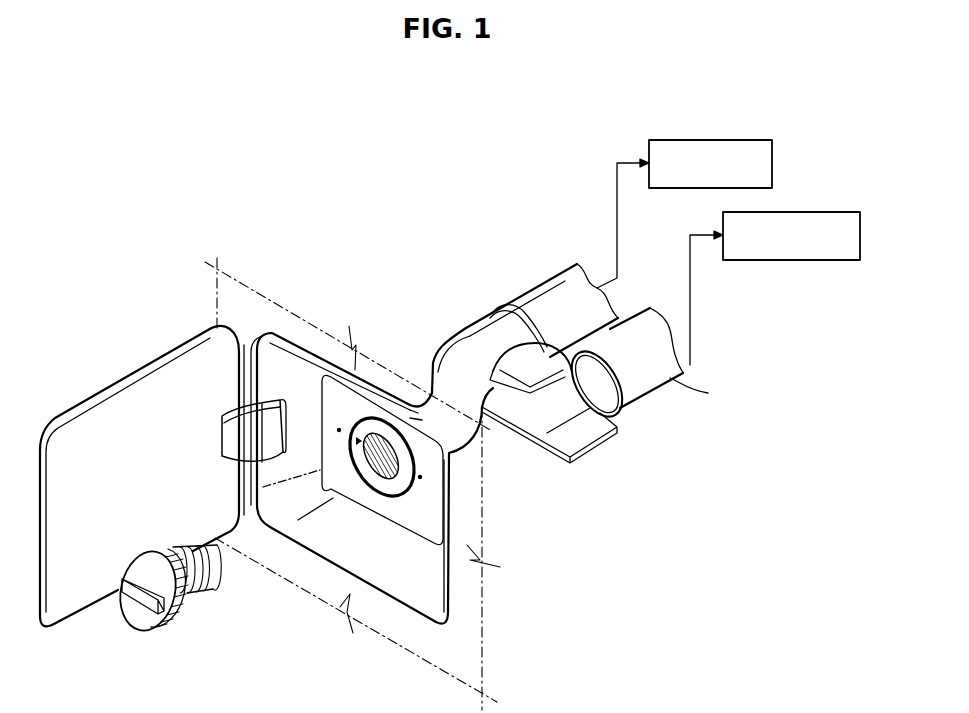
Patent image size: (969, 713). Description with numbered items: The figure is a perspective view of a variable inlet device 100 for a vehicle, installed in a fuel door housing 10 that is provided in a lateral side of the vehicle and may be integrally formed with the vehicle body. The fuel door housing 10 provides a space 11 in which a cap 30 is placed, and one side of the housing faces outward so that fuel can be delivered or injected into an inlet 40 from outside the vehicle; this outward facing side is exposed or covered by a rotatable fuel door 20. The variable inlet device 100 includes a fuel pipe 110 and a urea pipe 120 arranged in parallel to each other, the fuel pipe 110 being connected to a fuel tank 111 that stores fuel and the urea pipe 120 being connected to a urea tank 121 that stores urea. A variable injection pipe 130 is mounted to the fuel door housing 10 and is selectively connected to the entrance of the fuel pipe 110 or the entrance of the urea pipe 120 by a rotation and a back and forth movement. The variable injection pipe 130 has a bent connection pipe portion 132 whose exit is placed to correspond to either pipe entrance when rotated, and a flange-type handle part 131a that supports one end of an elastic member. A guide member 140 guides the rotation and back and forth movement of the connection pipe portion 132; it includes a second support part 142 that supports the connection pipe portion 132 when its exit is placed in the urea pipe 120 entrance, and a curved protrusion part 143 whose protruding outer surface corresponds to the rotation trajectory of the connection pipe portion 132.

The fuel door housing 10 is at (352, 480).
The space 11 is at (397, 558).
The fuel door 20 is at (88, 422).
The cap 30 is at (155, 622).
The inlet 40 is at (362, 458).
The variable inlet device 100 is at (468, 232).
The fuel pipe 110 is at (552, 280).
The fuel tank 111 is at (729, 140).
The urea pipe 120 is at (660, 378).
The urea tank 121 is at (826, 212).
The variable injection pipe 130 is at (415, 343).
The handle part 131a is at (377, 430).
The connection pipe portion 132 is at (477, 340).
The guide member 140 is at (583, 415).
The second support part 142 is at (582, 433).
The curved protrusion part 143 is at (506, 305).